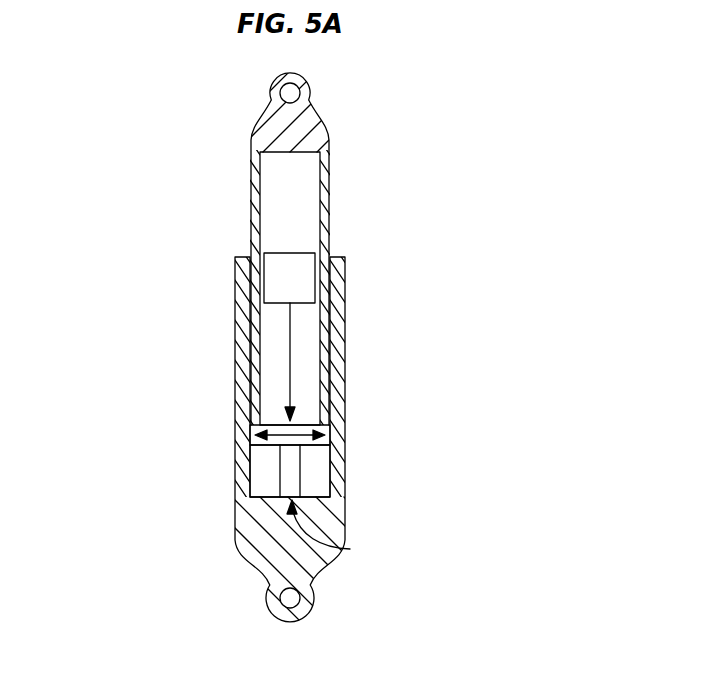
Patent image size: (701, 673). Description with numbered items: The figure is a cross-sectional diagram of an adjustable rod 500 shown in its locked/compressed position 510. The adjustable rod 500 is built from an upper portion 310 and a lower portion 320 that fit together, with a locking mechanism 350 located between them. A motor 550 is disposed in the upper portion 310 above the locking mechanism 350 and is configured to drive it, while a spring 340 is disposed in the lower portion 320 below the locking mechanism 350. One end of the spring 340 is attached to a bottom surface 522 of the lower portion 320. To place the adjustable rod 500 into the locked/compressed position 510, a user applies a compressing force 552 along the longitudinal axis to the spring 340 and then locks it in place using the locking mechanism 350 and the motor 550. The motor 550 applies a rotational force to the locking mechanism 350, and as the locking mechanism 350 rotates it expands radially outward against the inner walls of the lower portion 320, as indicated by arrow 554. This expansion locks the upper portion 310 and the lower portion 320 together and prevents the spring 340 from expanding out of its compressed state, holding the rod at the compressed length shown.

The adjustable rod 500 is at (232, 100).
The locked/compressed position 510 is at (178, 533).
The upper portion 310 is at (250, 198).
The lower portion 320 is at (235, 300).
The spring 340 is at (290, 465).
The locking mechanism 350 is at (255, 427).
The motor 550 is at (308, 284).
The compressing force 552 is at (300, 369).
The arrow 554 is at (308, 444).
The bottom surface 522 is at (339, 529).